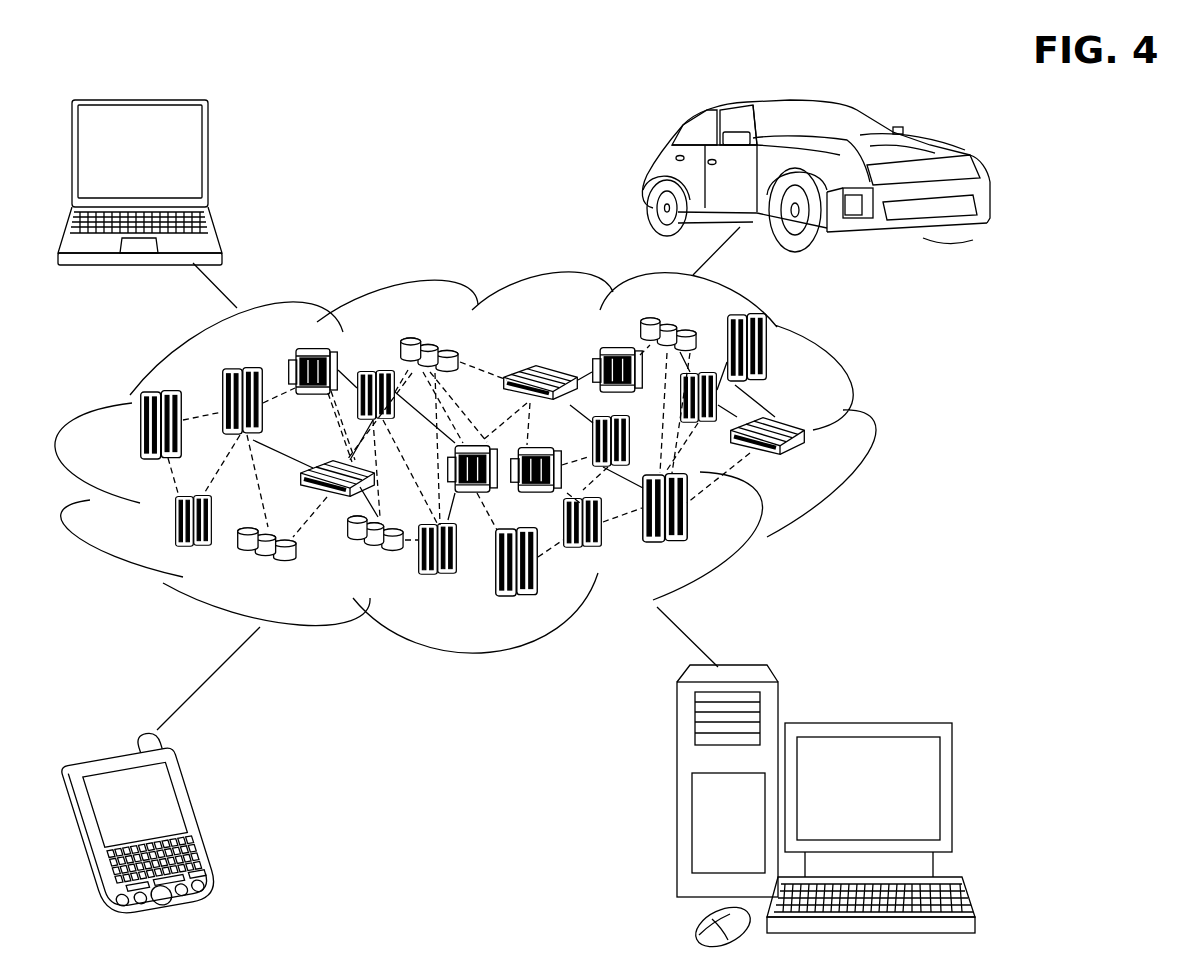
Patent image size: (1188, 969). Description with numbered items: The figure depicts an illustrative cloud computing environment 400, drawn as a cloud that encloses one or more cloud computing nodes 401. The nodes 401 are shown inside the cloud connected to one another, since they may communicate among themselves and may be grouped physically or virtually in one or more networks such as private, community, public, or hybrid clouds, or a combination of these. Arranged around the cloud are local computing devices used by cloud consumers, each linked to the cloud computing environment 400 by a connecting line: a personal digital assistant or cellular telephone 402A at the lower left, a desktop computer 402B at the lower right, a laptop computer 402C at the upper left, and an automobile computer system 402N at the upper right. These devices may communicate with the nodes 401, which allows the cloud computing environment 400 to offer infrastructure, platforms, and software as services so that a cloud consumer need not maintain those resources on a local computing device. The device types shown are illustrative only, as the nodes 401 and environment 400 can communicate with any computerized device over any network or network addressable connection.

The cloud computing environment 400 is at (870, 437).
The cloud computing nodes 401 is at (807, 463).
The personal digital assistant (PDA) or cellular telephone 402A is at (200, 817).
The desktop computer 402B is at (867, 722).
The laptop computer 402C is at (208, 162).
The automobile computer system 402N is at (645, 176).